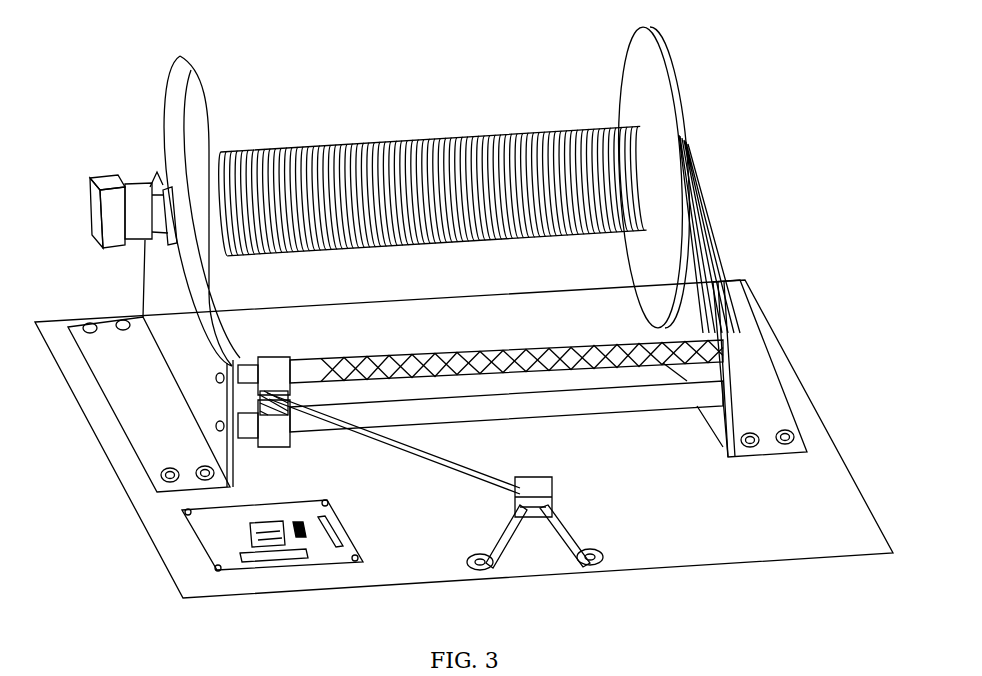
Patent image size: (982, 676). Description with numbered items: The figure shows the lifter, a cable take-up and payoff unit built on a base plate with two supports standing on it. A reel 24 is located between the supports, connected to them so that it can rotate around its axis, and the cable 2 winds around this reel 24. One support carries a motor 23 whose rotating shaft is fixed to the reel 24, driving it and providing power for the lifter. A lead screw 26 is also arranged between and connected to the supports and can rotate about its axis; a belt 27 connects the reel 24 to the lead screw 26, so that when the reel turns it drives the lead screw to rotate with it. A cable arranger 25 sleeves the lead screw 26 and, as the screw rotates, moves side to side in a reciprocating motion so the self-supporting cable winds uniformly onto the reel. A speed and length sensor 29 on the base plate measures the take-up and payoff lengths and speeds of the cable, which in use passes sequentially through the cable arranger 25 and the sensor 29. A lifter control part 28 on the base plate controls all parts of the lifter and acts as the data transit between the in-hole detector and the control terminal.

The cable 2 is at (490, 477).
The motor 23 is at (107, 187).
The reel 24 is at (675, 137).
The cable arranger 25 is at (283, 357).
The lead screw 26 is at (495, 348).
The belt 27 is at (712, 283).
The lifter control part 28 is at (318, 557).
The speed and length sensor 29 is at (550, 493).